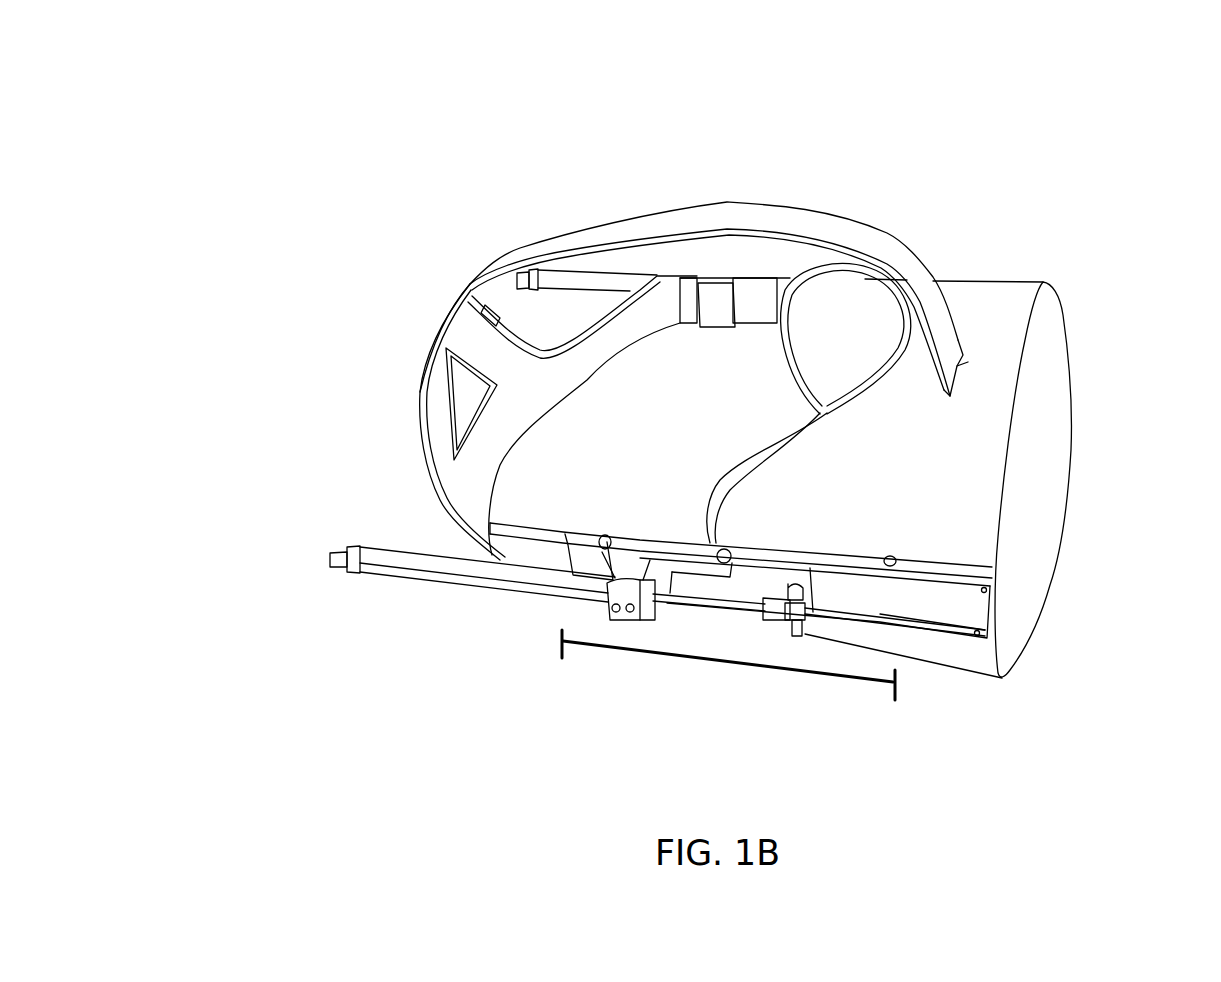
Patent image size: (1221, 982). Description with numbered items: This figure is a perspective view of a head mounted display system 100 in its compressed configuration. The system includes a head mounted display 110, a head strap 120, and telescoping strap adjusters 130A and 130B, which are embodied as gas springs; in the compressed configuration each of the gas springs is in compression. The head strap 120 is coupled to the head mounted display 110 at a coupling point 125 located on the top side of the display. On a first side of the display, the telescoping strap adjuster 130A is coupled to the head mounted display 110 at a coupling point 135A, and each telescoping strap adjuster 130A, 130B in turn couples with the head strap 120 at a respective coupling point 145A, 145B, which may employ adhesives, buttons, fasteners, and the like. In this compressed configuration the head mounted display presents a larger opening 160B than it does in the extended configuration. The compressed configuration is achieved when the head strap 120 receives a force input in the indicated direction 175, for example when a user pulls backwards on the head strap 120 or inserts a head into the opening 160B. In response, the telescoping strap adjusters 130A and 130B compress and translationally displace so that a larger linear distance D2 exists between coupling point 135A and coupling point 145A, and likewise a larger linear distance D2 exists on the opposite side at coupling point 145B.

The head mounted display system 100 is at (148, 75).
The head mounted display 110 is at (1018, 472).
The head strap 120 is at (460, 312).
The coupling point 125 is at (960, 370).
The telescoping strap adjuster 130A is at (552, 585).
The second telescoping strap adjuster 130B is at (590, 278).
The coupling point 135A is at (896, 560).
The coupling point 145A is at (600, 532).
The coupling point 145B is at (700, 300).
The opening 160B is at (587, 427).
The indicated direction 175 is at (405, 380).
The linear distance D2 is at (718, 677).